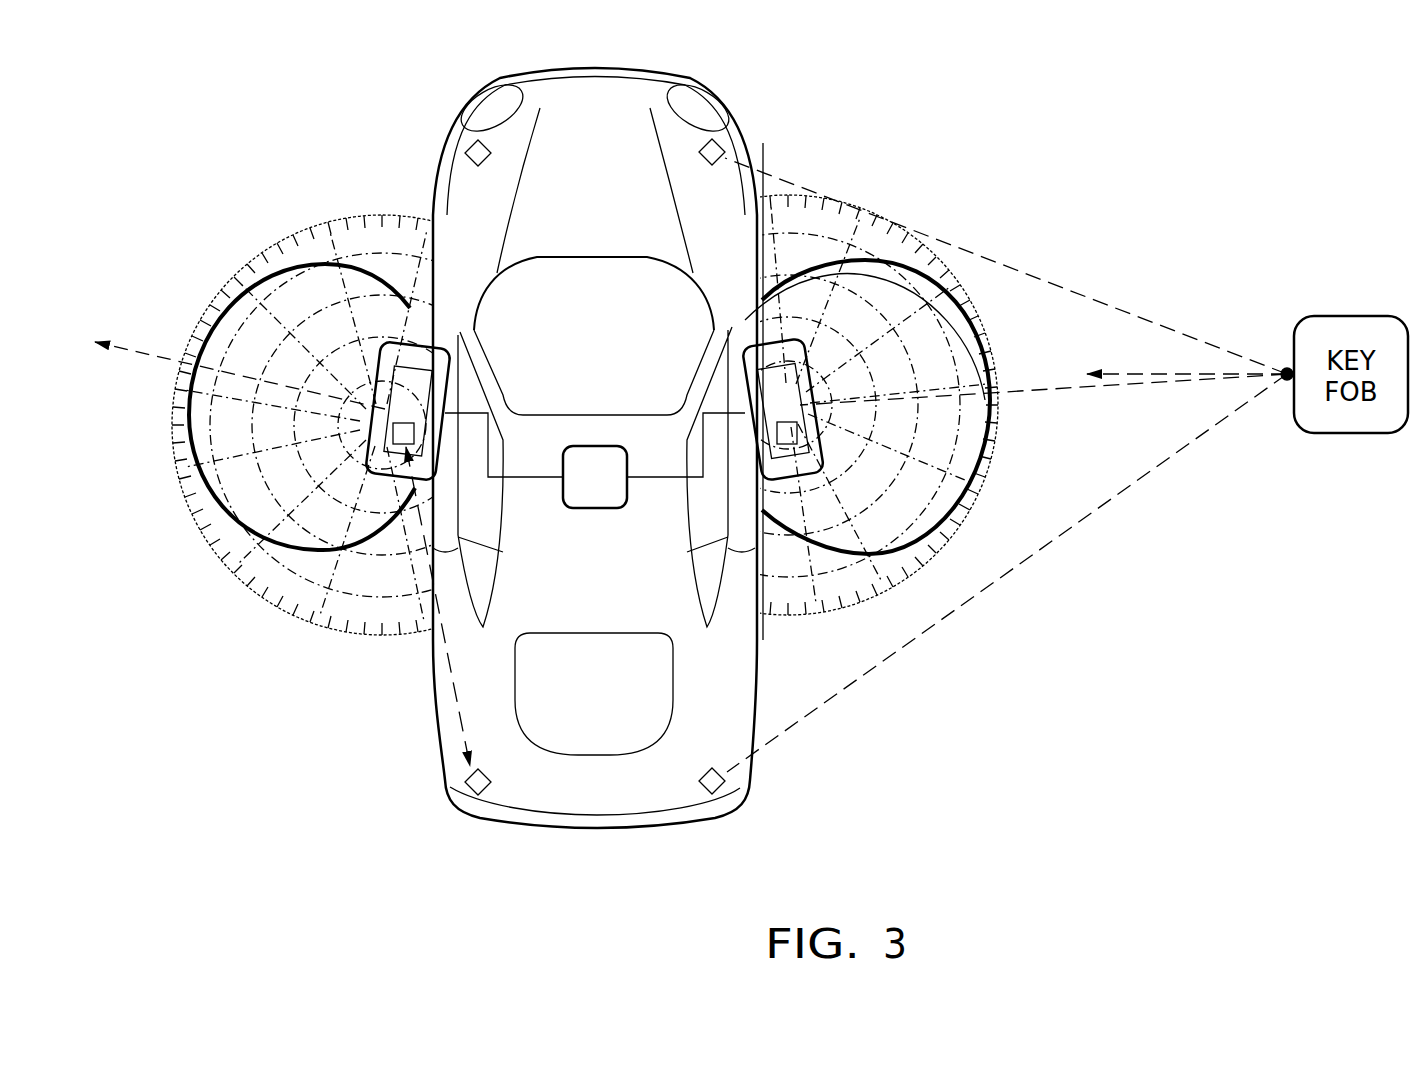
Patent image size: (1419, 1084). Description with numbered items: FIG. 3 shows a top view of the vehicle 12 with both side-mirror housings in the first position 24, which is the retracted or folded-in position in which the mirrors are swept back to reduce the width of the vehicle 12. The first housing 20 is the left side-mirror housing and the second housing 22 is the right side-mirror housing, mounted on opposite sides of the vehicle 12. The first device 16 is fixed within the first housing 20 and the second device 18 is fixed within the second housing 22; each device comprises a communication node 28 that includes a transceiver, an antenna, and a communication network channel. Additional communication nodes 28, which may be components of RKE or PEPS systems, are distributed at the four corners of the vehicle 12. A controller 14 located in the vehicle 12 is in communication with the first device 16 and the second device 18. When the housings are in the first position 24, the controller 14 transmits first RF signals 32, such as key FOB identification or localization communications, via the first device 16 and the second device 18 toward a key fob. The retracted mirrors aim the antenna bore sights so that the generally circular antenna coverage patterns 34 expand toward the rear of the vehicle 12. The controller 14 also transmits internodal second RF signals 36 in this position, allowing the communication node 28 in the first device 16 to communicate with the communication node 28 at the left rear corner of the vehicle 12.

The vehicle 12 is at (598, 795).
The controller 14 is at (607, 508).
The first device 16 is at (407, 480).
The second device 18 is at (808, 478).
The first housing 20 is at (418, 340).
The second housing 22 is at (768, 340).
The first position 24 is at (381, 326).
The communication node 28 is at (470, 150).
The first RF signals 32 is at (156, 353).
The antenna coverage pattern 34 is at (270, 552).
The second RF signals 36 is at (450, 666).